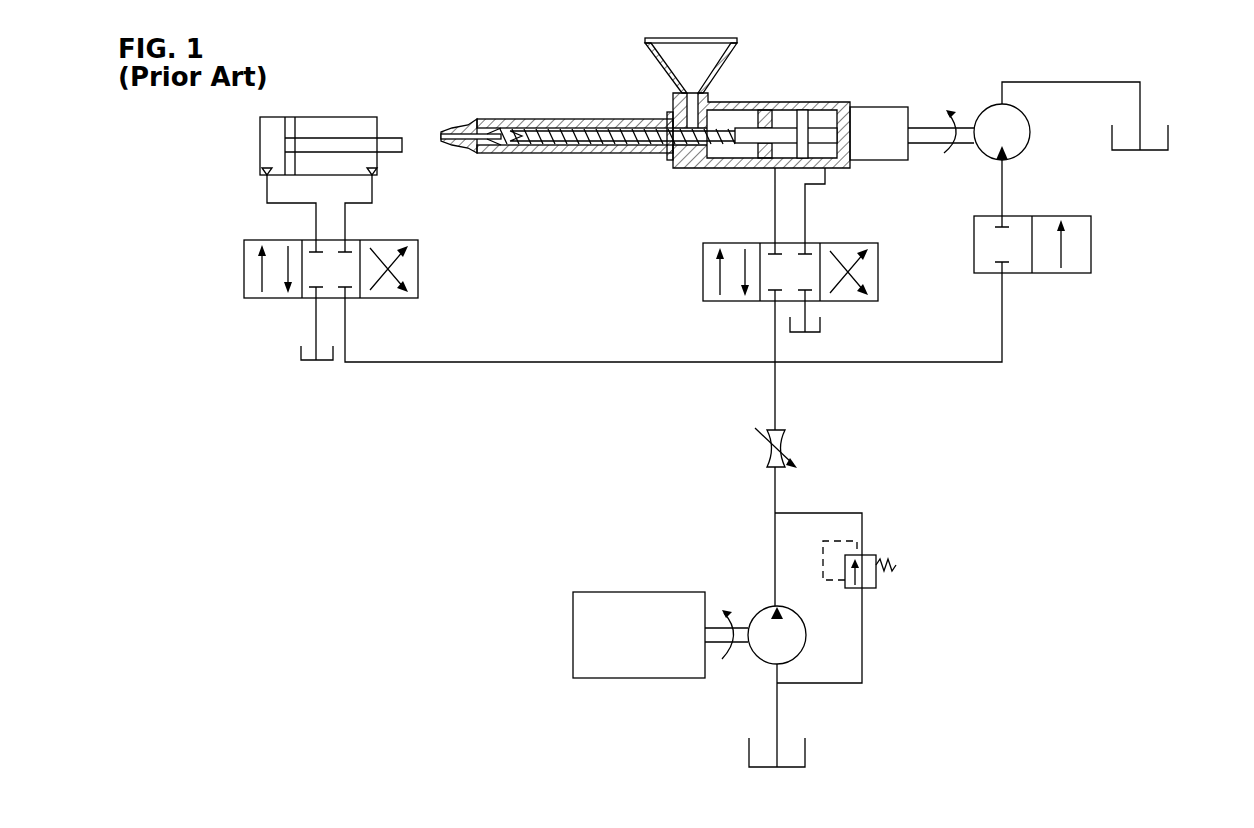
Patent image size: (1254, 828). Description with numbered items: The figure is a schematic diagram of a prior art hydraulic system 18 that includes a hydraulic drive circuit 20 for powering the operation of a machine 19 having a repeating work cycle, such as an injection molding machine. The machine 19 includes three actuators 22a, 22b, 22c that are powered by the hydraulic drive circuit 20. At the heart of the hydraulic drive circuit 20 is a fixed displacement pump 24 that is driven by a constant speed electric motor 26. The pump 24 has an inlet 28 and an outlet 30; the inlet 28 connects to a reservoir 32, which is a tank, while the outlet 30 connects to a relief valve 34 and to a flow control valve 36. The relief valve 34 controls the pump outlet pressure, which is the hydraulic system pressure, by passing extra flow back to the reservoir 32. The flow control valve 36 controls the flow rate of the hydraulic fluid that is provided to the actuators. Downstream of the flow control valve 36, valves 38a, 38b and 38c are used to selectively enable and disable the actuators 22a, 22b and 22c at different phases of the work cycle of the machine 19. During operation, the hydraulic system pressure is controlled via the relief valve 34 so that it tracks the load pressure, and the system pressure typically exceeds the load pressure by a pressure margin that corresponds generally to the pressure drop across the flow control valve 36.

The hydraulic system 18 is at (1180, 79).
The machine 19 is at (788, 89).
The hydraulic drive circuit 20 is at (892, 465).
The actuator 22a is at (318, 117).
The actuator 22b is at (823, 102).
The actuator 22c is at (985, 108).
The fixed displacement pump 24 is at (805, 642).
The electric motor 26 is at (640, 592).
The inlet 28 is at (777, 666).
The outlet 30 is at (776, 606).
The reservoir 32 is at (322, 363).
The relief valve 34 is at (878, 583).
The flow control valve 36 is at (784, 442).
The valve 38a is at (418, 268).
The valve 38b is at (703, 272).
The valve 38c is at (1091, 248).